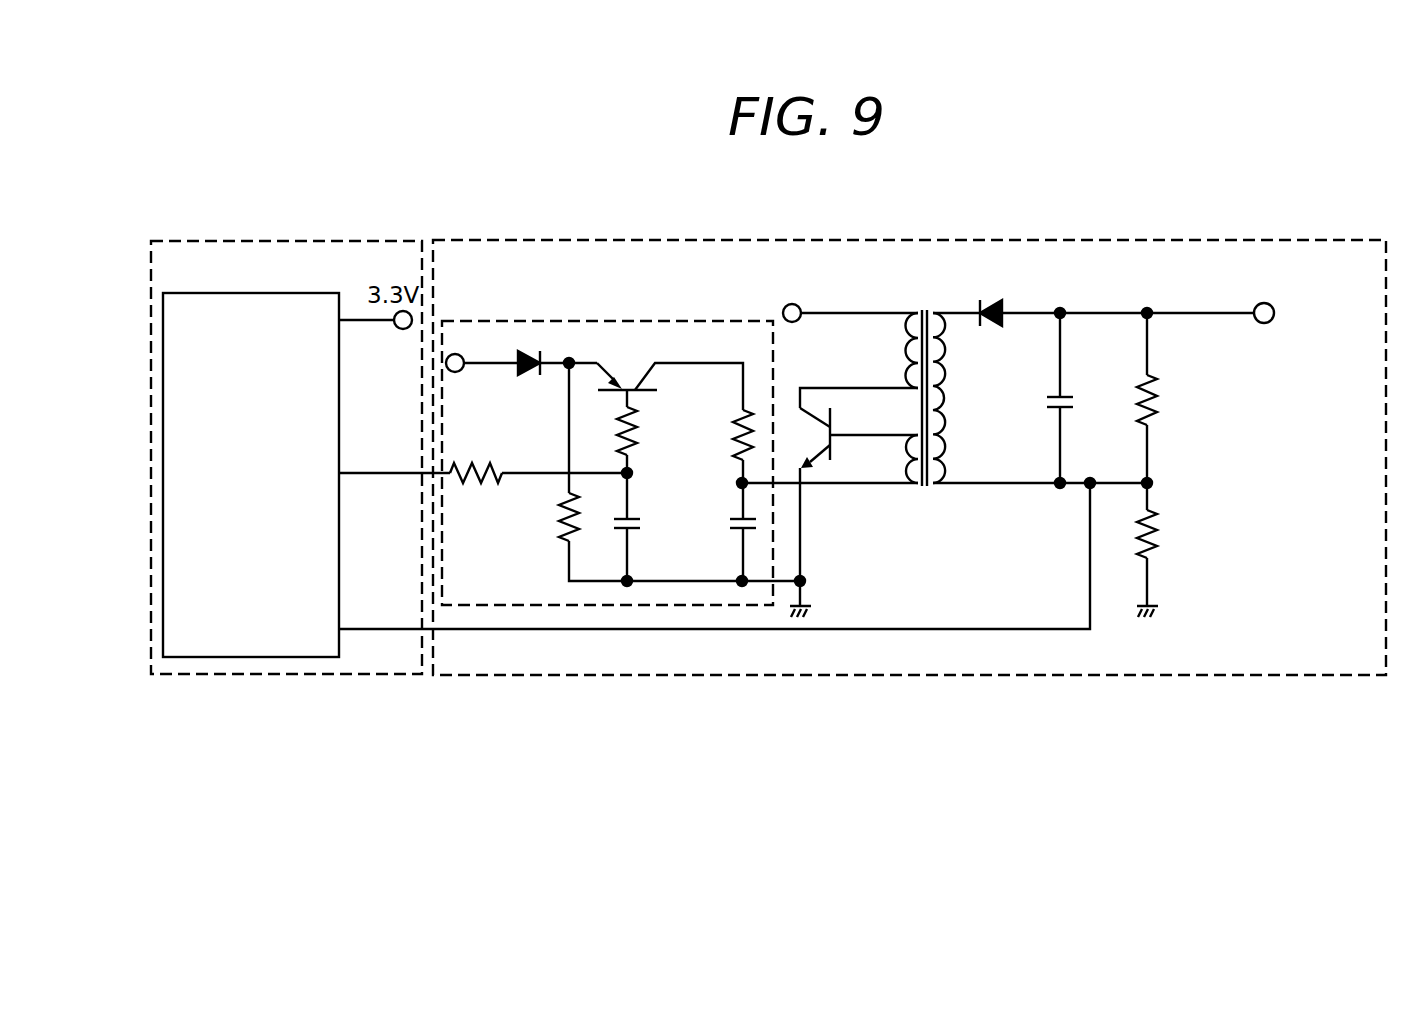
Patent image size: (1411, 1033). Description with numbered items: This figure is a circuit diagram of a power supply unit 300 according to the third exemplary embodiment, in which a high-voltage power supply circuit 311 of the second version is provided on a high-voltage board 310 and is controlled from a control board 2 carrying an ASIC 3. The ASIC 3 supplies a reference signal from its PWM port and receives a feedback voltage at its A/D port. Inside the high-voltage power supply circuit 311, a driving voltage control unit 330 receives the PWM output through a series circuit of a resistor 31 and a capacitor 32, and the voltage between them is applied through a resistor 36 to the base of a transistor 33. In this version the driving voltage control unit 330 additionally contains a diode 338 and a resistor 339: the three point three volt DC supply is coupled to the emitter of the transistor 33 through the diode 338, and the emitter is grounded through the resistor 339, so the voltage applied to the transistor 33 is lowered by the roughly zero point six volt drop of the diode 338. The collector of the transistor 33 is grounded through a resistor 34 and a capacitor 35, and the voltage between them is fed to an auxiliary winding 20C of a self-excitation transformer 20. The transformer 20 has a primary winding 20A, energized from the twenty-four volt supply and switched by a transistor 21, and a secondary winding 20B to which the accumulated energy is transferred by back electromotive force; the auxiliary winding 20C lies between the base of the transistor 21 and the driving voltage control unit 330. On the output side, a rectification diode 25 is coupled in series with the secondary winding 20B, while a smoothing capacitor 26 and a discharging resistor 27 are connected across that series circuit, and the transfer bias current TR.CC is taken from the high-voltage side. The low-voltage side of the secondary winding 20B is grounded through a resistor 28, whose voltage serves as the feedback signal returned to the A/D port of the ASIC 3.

The control board 2 is at (295, 240).
The ASIC 3 is at (270, 293).
The power supply unit 300 is at (1110, 193).
The high-voltage board 310 is at (1148, 240).
The high-voltage power supply circuit 311 is at (1221, 465).
The driving voltage control unit 330 is at (610, 321).
The diode 338 is at (537, 350).
The resistor 339 is at (568, 537).
The resistor 31 is at (472, 487).
The capacitor 32 is at (633, 518).
The transistor 33 is at (640, 393).
The resistor 34 is at (741, 412).
The capacitor 35 is at (745, 530).
The resistor 36 is at (640, 428).
The transformer 20 is at (928, 410).
The primary winding 20A is at (900, 360).
The secondary winding 20B is at (950, 391).
The auxiliary winding 20C is at (908, 494).
The transistor 21 is at (820, 466).
The rectification diode 25 is at (992, 303).
The smoothing capacitor 26 is at (1065, 395).
The discharging resistor 27 is at (1150, 376).
The resistor 28 is at (1150, 510).